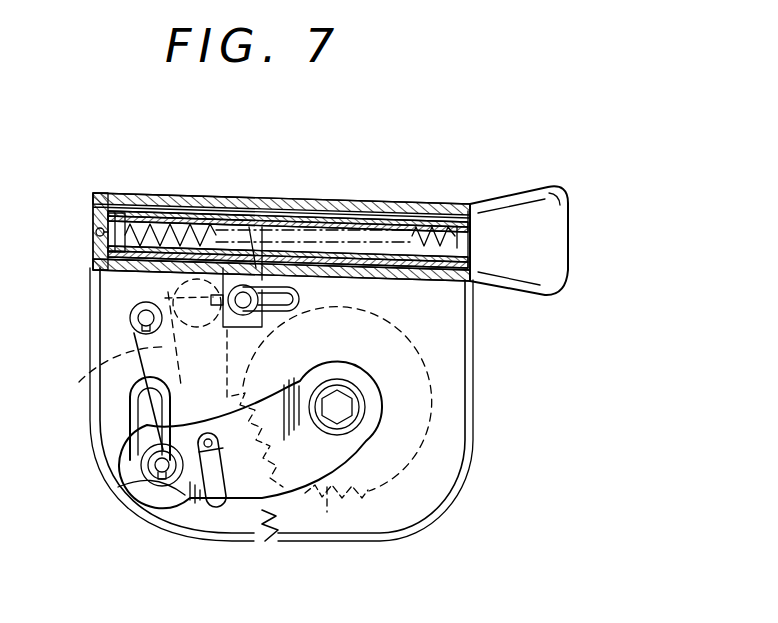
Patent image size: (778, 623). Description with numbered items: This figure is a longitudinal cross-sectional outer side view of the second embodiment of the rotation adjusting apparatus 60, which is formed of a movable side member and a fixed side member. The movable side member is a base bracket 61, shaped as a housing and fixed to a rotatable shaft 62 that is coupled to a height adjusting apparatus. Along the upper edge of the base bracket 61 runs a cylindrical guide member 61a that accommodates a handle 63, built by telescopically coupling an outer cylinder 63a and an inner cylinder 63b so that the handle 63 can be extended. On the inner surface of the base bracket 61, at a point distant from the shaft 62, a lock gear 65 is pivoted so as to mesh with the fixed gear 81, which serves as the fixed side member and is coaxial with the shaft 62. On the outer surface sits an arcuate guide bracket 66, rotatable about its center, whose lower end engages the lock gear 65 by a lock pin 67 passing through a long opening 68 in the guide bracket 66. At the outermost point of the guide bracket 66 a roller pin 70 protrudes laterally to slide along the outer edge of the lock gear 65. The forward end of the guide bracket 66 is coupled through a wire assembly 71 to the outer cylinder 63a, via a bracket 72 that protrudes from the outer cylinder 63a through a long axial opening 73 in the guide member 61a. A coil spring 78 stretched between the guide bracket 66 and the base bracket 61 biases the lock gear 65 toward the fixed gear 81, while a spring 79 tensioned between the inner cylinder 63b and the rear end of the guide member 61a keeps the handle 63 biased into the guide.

The rotation adjusting apparatus 60 is at (633, 183).
The base bracket 61 is at (478, 383).
The cylindrical guide member 61a is at (224, 197).
The rotatable shaft 62 is at (368, 433).
The handle 63 is at (513, 146).
The outer cylinder 63a is at (414, 206).
The inner cylinder 63b is at (458, 205).
The lock gear 65 is at (90, 383).
The arcuate guide bracket 66 is at (356, 462).
The lock pin 67 is at (182, 498).
The long opening 68 is at (210, 505).
The roller pin 70 is at (128, 478).
The wire assembly 71 is at (135, 440).
The bracket 72 is at (282, 202).
The long axial opening 73 is at (398, 281).
The coil spring 78 is at (266, 518).
The spring 79 is at (160, 193).
The fixed gear 81 is at (323, 512).